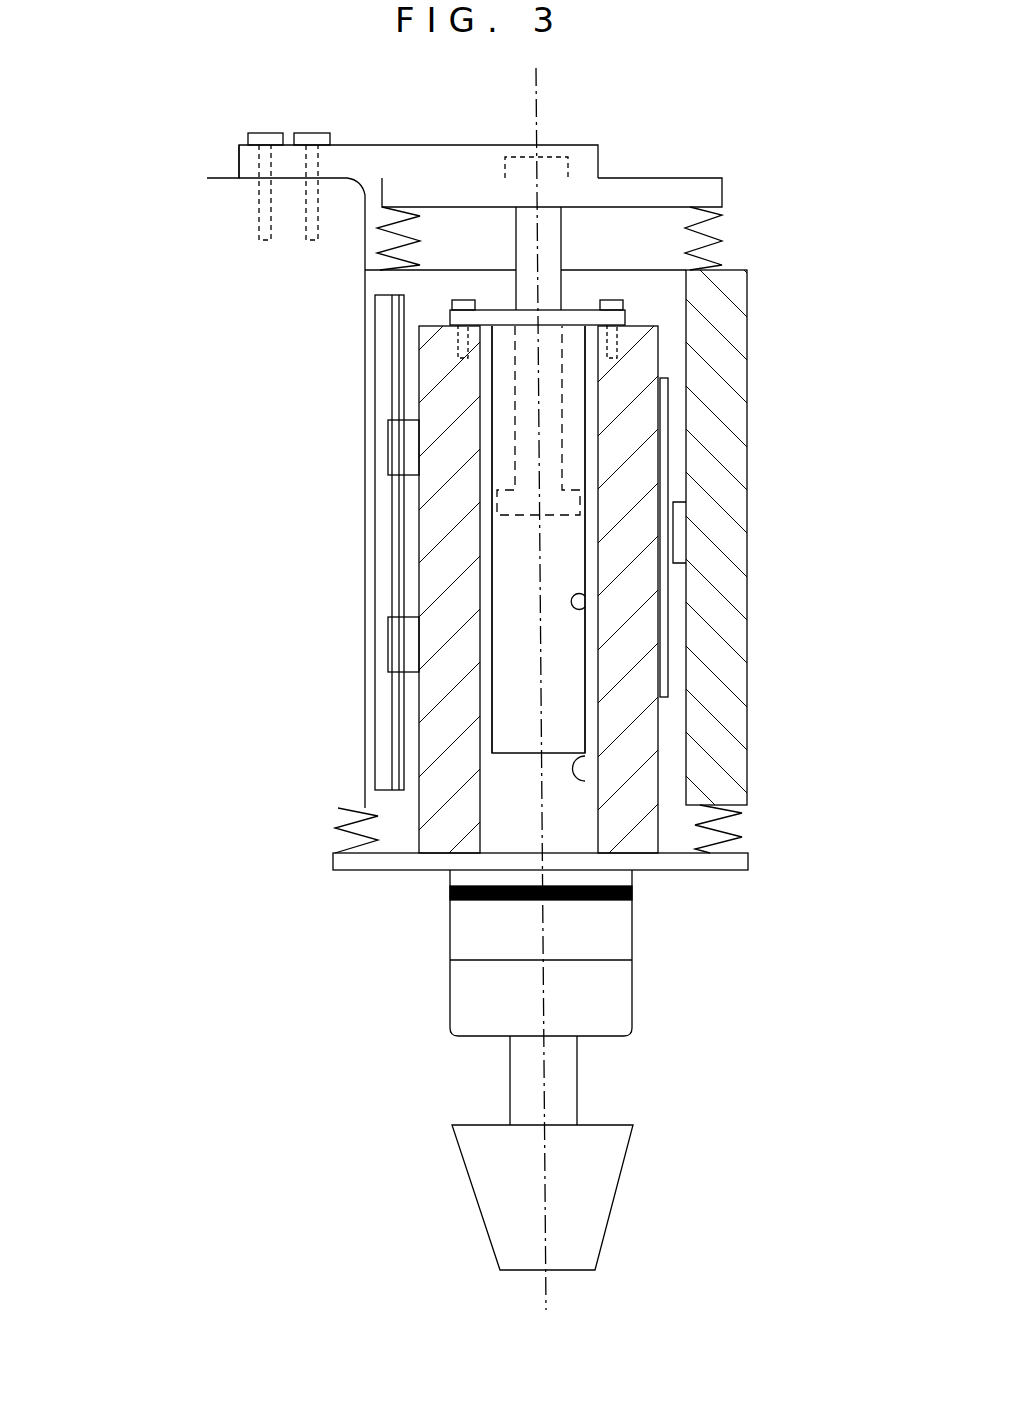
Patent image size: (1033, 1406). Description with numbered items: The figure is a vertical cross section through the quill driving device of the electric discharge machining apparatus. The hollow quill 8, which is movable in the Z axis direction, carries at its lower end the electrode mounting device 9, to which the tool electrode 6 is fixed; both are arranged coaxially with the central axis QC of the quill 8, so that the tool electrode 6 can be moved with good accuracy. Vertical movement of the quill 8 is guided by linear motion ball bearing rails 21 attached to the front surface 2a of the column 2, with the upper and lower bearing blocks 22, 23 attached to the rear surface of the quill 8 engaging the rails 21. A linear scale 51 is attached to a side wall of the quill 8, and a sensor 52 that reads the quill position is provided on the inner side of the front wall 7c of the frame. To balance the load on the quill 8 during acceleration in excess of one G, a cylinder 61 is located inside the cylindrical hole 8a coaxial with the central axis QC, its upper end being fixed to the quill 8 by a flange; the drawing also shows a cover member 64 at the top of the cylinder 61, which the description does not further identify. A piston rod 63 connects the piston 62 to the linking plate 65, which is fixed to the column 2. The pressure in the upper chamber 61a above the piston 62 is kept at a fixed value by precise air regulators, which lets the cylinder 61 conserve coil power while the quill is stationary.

The central axis QC is at (538, 100).
The column 2 is at (208, 770).
The front surface of the column 2a is at (366, 178).
The linking plate 65 is at (385, 155).
The piston rod 63 is at (548, 223).
The cover plate 64 is at (590, 315).
The cylinder 61 is at (585, 610).
The upper chamber 61a is at (577, 400).
The piston 62 is at (568, 508).
The linear motion ball bearing rails 21 is at (387, 352).
The upper bearing block 22 is at (400, 457).
The lower bearing block 23 is at (400, 637).
The linear scale 51 is at (663, 465).
The sensor 52 is at (682, 518).
The front wall of the frame 7c is at (723, 290).
The cylindrical hole 8a is at (598, 752).
The quill 8 is at (638, 803).
The electrode mounting device 9 is at (470, 986).
The tool electrode 6 is at (493, 1165).